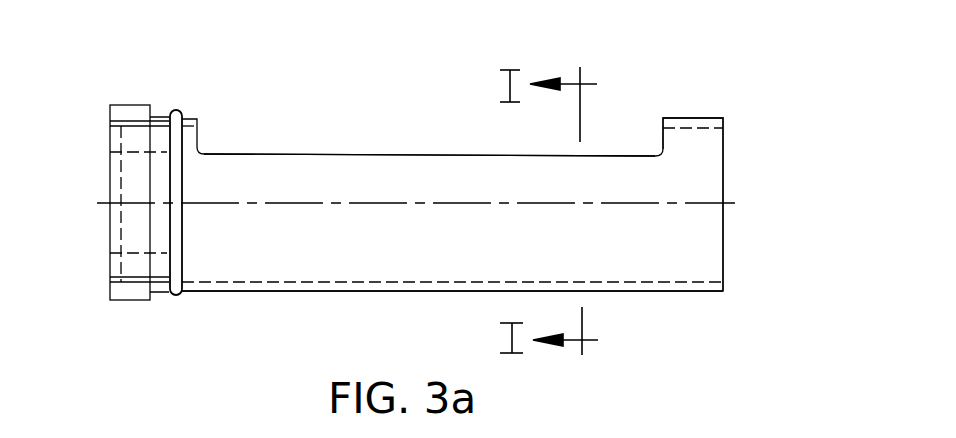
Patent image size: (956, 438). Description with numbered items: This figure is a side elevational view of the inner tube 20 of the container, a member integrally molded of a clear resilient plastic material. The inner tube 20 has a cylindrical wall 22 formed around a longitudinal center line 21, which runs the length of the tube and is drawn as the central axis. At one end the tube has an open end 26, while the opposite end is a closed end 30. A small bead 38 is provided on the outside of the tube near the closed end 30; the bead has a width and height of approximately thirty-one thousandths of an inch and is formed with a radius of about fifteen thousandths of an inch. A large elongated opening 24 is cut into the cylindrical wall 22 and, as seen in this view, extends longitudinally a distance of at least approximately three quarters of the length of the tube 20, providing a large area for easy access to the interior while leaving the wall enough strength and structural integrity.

The inner tube 20 is at (241, 308).
The longitudinal center line 21 is at (677, 204).
The cylindrical wall 22 is at (632, 291).
The elongated opening 24 is at (445, 134).
The open end 26 is at (723, 169).
The closed end 30 is at (110, 185).
The bead 38 is at (175, 110).